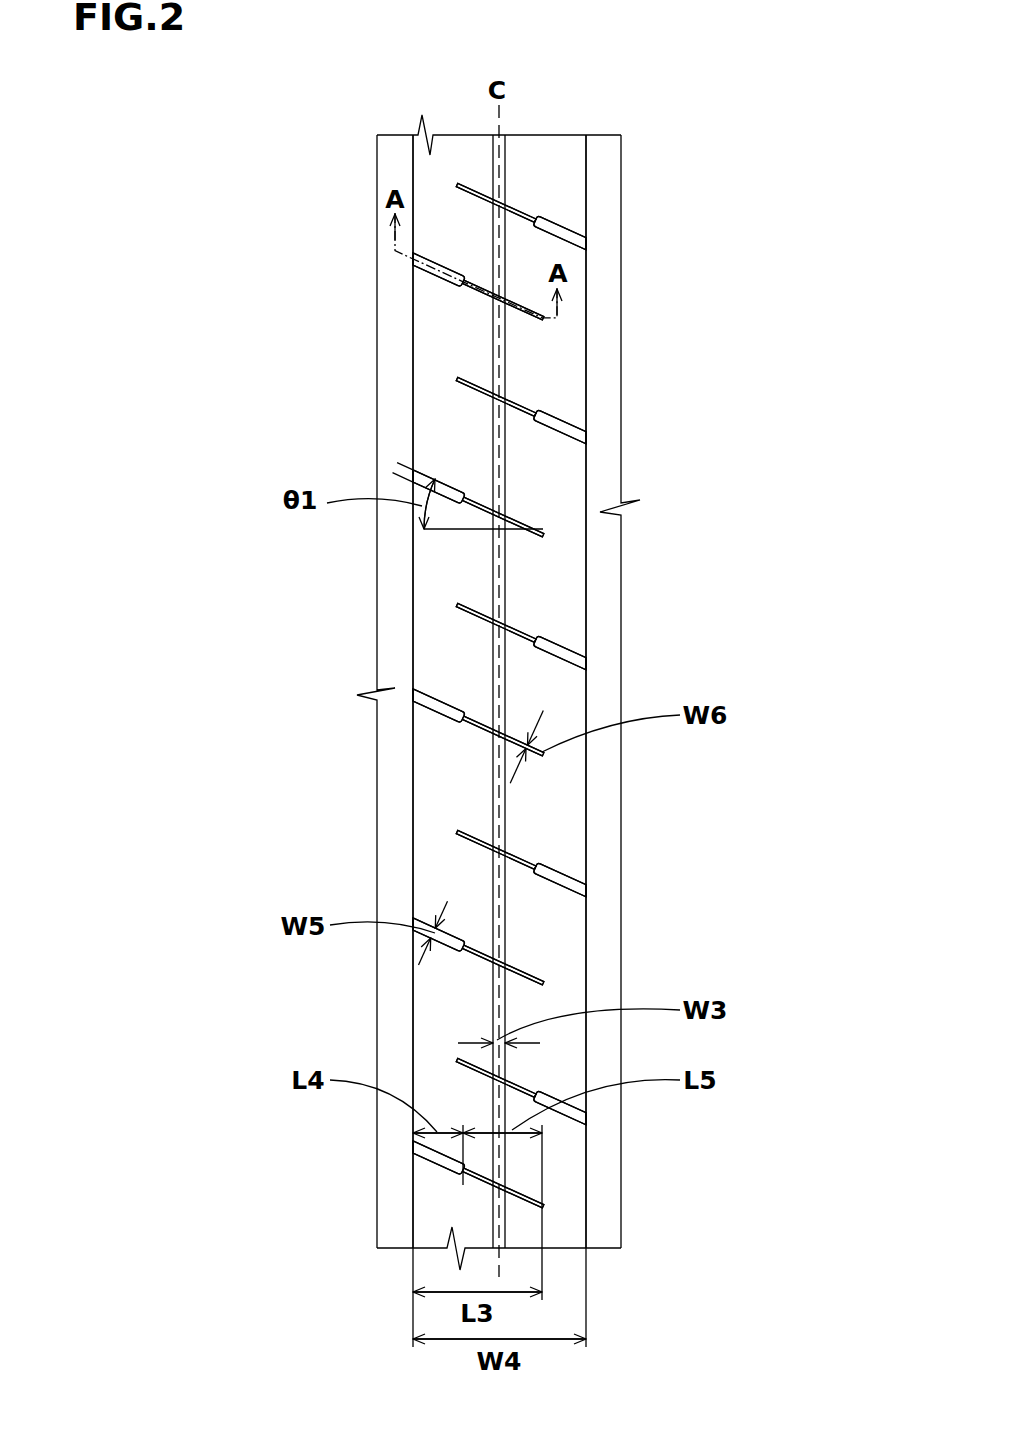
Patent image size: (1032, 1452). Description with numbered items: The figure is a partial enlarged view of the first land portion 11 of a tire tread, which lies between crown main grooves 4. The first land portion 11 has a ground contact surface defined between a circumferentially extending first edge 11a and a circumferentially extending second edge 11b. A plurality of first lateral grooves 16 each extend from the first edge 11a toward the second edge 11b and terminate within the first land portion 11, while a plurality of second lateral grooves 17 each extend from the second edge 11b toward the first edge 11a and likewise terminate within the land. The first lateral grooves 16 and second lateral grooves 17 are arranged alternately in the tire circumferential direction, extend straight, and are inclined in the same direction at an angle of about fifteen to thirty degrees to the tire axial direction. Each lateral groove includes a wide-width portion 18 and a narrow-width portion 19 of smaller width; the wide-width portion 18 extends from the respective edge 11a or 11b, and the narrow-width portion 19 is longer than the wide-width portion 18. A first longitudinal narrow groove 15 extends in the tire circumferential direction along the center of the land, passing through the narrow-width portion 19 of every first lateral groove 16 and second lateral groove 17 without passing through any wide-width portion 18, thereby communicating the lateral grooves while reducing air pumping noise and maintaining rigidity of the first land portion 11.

The crown main grooves 4 is at (395, 165).
The first land portion 11 is at (470, 165).
The first edge 11a is at (412, 353).
The second edge 11b is at (586, 330).
The first longitudinal narrow groove 15 is at (500, 170).
The first lateral grooves 16 is at (440, 274).
The second lateral grooves 17 is at (563, 425).
The wide-width portion 18 is at (560, 653).
The narrow-width portion 19 is at (520, 630).